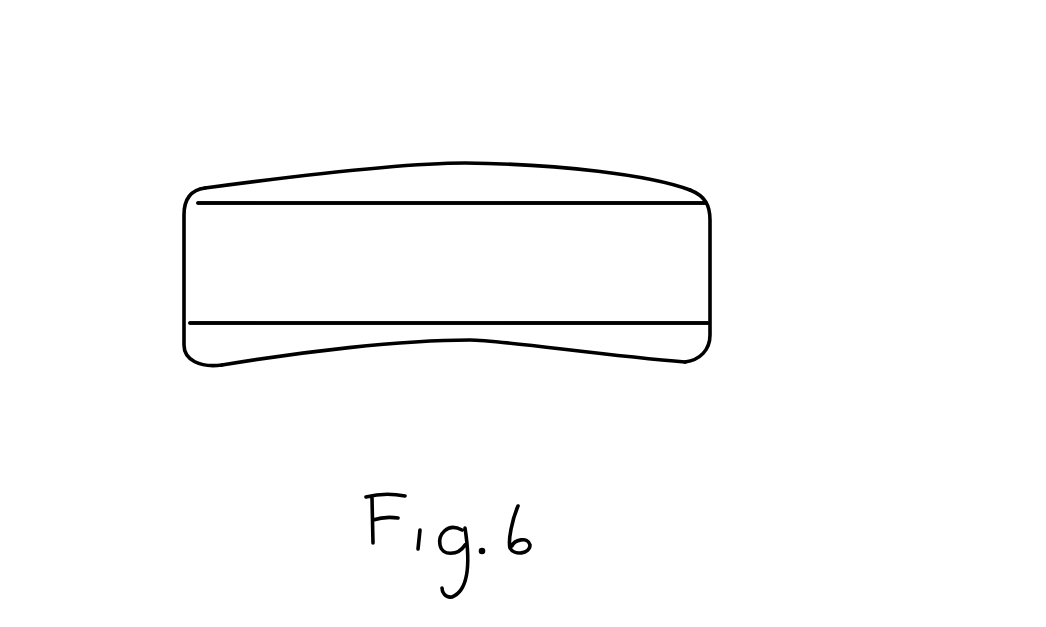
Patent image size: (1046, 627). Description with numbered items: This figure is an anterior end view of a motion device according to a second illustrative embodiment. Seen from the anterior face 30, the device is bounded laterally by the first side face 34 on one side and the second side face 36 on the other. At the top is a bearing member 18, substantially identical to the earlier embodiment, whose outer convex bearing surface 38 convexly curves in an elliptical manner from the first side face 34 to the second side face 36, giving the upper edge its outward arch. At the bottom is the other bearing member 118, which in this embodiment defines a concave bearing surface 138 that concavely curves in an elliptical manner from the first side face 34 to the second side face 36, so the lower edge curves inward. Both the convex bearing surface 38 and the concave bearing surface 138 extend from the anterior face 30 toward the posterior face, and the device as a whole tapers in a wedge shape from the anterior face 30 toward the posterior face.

The bearing member 18 is at (594, 183).
The anterior face 30 is at (810, 165).
The first side face 34 is at (183, 272).
The second side face 36 is at (765, 258).
The convex bearing surface 38 is at (448, 172).
The bearing member 118 is at (708, 400).
The concave bearing surface 138 is at (312, 390).